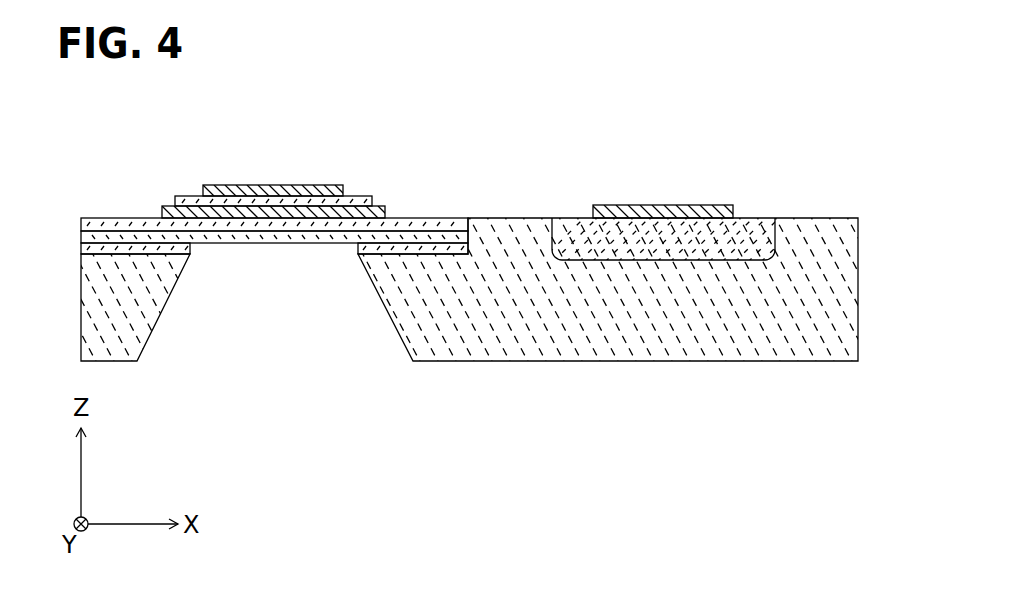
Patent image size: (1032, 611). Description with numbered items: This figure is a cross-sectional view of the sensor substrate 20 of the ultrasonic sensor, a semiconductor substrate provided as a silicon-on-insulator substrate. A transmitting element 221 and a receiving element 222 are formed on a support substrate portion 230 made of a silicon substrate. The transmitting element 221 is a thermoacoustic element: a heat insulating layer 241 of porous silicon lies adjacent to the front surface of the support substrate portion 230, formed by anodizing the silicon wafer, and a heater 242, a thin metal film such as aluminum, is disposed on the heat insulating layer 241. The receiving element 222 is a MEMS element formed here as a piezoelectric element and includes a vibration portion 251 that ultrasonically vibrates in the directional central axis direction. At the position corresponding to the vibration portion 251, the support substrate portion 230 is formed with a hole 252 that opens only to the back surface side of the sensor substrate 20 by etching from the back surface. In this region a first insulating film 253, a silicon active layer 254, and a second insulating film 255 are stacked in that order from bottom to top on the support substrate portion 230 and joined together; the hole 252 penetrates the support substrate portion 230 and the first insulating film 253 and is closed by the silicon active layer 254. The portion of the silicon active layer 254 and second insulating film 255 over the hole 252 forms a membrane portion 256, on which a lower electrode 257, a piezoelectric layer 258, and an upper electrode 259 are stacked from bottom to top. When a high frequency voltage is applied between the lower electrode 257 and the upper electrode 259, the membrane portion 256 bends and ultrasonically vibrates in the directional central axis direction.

The sensor substrate 20 is at (866, 189).
The transmitting element 221 is at (775, 180).
The receiving element 222 is at (158, 157).
The support substrate portion 230 is at (847, 268).
The heat insulating layer 241 is at (570, 227).
The heater 242 is at (663, 207).
The vibration portion 251 is at (247, 253).
The hole 252 is at (392, 323).
The first insulating film 253 is at (82, 248).
The silicon active layer 254 is at (82, 233).
The second insulating film 255 is at (93, 218).
The membrane portion 256 is at (310, 232).
The lower electrode 257 is at (382, 207).
The piezoelectric layer 258 is at (362, 195).
The upper electrode 259 is at (290, 185).